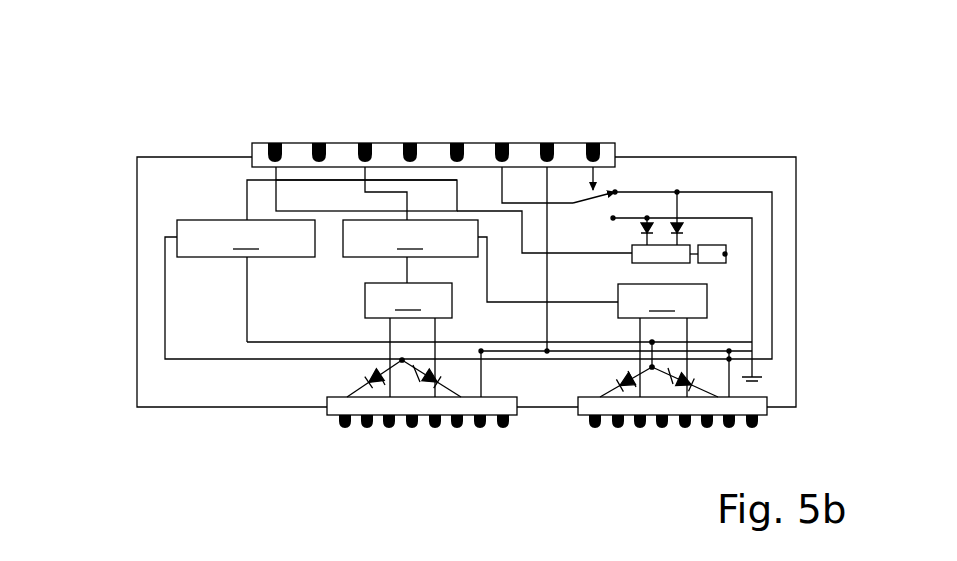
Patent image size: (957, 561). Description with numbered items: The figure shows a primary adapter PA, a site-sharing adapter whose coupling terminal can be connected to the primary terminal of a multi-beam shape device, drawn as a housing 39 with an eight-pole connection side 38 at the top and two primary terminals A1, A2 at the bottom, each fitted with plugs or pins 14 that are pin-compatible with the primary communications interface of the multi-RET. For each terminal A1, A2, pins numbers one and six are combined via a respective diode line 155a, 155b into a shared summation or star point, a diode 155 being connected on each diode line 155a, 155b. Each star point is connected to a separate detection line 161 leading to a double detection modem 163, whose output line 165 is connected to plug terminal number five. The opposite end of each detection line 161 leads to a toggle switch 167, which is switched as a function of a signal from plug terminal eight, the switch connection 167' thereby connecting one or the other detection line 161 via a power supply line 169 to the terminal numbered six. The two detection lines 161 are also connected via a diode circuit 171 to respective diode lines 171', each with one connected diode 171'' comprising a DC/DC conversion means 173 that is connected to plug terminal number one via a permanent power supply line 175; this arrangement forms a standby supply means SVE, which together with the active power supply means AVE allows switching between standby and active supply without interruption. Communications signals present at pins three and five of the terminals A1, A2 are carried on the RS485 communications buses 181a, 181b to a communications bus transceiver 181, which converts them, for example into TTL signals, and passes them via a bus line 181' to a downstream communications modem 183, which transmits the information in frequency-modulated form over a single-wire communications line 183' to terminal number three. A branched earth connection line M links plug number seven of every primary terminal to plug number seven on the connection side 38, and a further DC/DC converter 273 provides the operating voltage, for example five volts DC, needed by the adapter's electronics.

The connection side 38 is at (230, 113).
The housing / cabling adapter 39 is at (138, 422).
The plugs or pins 14 is at (327, 440).
The diode 155 is at (372, 380).
The diode line 155a is at (345, 393).
The diode line 155b is at (456, 395).
The detection line 161 is at (247, 307).
The double detection modem 163 is at (246, 238).
The output line 165 is at (247, 190).
The toggle switch 167 is at (624, 115).
The switch connection line 167' is at (617, 134).
The power supply line 169 is at (505, 183).
The diode circuit 171 is at (754, 175).
The diode line 171' is at (741, 243).
The diode 171'' is at (671, 181).
The DC/DC conversion means 173 is at (667, 258).
The permanent power supply line 175 is at (485, 206).
The communications bus transceiver 181 is at (536, 300).
The bus line 181' is at (459, 269).
The communications bus 181a is at (390, 330).
The communications bus 181b is at (437, 331).
The communications modem 183 is at (410, 212).
The communications line 183' is at (366, 189).
The DC/DC converter 273 is at (726, 254).
The earth connection line M is at (547, 276).
The primary adapter PA is at (752, 105).
The active power supply means AVE is at (577, 182).
The standby supply means SVE is at (629, 244).
The primary terminal A1 is at (421, 442).
The primary terminal A2 is at (679, 447).